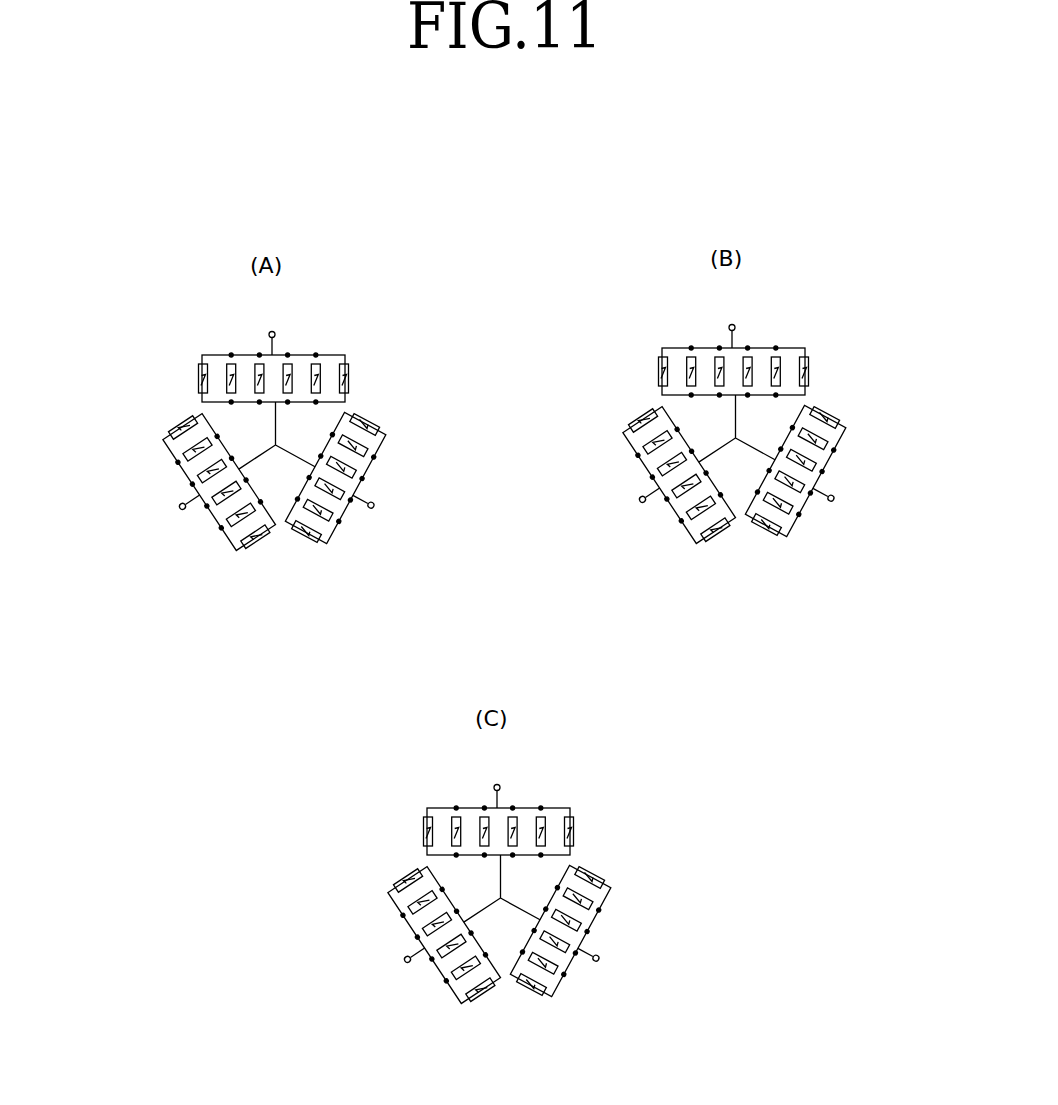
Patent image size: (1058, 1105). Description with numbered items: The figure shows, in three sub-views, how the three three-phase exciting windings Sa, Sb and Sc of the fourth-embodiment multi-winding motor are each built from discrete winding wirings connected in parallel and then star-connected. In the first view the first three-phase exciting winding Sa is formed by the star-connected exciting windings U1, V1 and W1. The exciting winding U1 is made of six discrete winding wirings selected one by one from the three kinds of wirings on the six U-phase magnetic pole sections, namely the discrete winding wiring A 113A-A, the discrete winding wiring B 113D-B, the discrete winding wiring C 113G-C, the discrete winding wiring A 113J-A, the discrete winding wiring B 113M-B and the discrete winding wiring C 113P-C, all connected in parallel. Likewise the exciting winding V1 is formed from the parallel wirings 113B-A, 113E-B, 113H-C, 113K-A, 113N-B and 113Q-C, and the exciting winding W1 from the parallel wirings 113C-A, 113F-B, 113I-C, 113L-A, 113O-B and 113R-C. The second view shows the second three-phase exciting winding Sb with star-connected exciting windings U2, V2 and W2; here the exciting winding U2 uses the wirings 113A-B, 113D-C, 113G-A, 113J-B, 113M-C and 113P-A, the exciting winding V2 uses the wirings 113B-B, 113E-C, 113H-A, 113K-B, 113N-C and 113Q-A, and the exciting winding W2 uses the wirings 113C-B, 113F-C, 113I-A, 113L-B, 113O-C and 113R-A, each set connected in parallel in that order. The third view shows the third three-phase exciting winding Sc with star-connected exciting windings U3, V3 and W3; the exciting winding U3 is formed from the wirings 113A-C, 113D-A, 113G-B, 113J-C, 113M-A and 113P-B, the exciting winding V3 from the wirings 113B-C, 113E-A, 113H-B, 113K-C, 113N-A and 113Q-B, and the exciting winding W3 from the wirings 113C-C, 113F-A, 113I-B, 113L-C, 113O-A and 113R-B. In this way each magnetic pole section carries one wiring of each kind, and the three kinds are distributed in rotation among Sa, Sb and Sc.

The first three-phase exciting winding Sa is at (80, 402).
The second three-phase exciting winding Sb is at (675, 445).
The third three-phase exciting winding Sc is at (440, 905).
The exciting winding U1 is at (175, 357).
The exciting winding V1 is at (392, 504).
The exciting winding W1 is at (167, 497).
The exciting winding U2 is at (656, 343).
The exciting winding V2 is at (860, 504).
The exciting winding W2 is at (614, 503).
The exciting winding U3 is at (421, 803).
The exciting winding V3 is at (625, 964).
The exciting winding W3 is at (379, 963).
The discrete winding wiring A 113A-A is at (202, 378).
The discrete winding wiring B 113D-B is at (231, 365).
The discrete winding wiring C 113G-C is at (259, 365).
The discrete winding wiring A 113J-A is at (288, 365).
The discrete winding wiring B 113M-B is at (316, 365).
The discrete winding wiring C 113P-C is at (346, 378).
The discrete winding wiring C 113R-C is at (175, 432).
The discrete winding wiring B 113O-B is at (189, 454).
The discrete winding wiring A 113L-A is at (203, 477).
The discrete winding wiring C 113I-C is at (219, 505).
The discrete winding wiring B 113F-B is at (231, 529).
The discrete winding wiring A 113C-A is at (250, 546).
The discrete winding wiring A 113B-A is at (376, 431).
The discrete winding wiring B 113E-B is at (366, 452).
The discrete winding wiring C 113H-C is at (354, 473).
The discrete winding wiring A 113K-A is at (334, 506).
The discrete winding wiring B 113N-B is at (326, 529).
The discrete winding wiring C 113Q-C is at (306, 545).
The discrete winding wiring B 113A-B is at (612, 371).
The discrete winding wiring C 113D-C is at (647, 350).
The discrete winding wiring A 113G-A is at (661, 333).
The discrete winding wiring B 113J-B is at (791, 333).
The discrete winding wiring C 113M-C is at (816, 350).
The discrete winding wiring A 113P-A is at (849, 371).
The discrete winding wiring A 113R-A is at (586, 425).
The discrete winding wiring C 113O-C is at (600, 448).
The discrete winding wiring B 113L-B is at (613, 471).
The discrete winding wiring A 113I-A is at (645, 511).
The discrete winding wiring C 113F-C is at (661, 533).
The discrete winding wiring B 113C-B is at (680, 556).
The discrete winding wiring B 113B-B is at (881, 423).
The discrete winding wiring C 113E-C is at (869, 447).
The discrete winding wiring A 113H-A is at (858, 470).
The discrete winding wiring B 113K-B is at (829, 506).
The discrete winding wiring C 113N-C is at (819, 528).
The discrete winding wiring A 113Q-A is at (802, 553).
The discrete winding wiring C 113A-C is at (377, 831).
The discrete winding wiring A 113D-A is at (412, 810).
The discrete winding wiring B 113G-B is at (426, 793).
The discrete winding wiring C 113J-C is at (557, 793).
The discrete winding wiring A 113M-A is at (581, 810).
The discrete winding wiring B 113P-B is at (613, 831).
The discrete winding wiring B 113R-B is at (351, 885).
The discrete winding wiring A 113O-A is at (365, 908).
The discrete winding wiring C 113L-C is at (378, 931).
The discrete winding wiring B 113I-B is at (410, 971).
The discrete winding wiring A 113F-A is at (426, 993).
The discrete winding wiring C 113C-C is at (445, 1016).
The discrete winding wiring C 113B-C is at (647, 883).
The discrete winding wiring A 113E-A is at (634, 907).
The discrete winding wiring B 113H-B is at (623, 930).
The discrete winding wiring C 113K-C is at (594, 966).
The discrete winding wiring A 113N-A is at (584, 988).
The discrete winding wiring B 113Q-B is at (567, 1013).